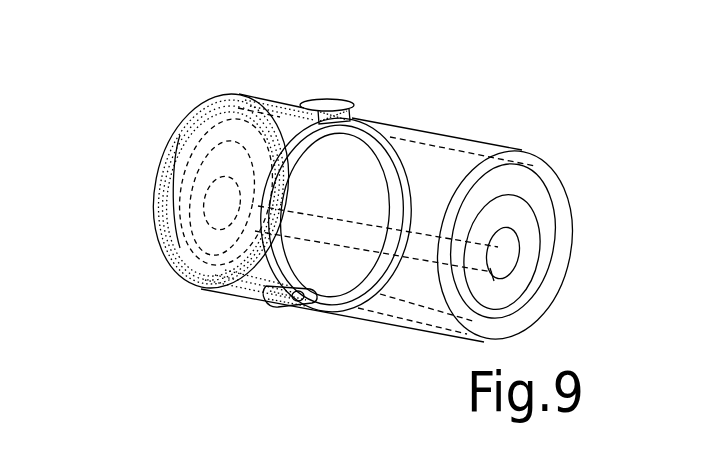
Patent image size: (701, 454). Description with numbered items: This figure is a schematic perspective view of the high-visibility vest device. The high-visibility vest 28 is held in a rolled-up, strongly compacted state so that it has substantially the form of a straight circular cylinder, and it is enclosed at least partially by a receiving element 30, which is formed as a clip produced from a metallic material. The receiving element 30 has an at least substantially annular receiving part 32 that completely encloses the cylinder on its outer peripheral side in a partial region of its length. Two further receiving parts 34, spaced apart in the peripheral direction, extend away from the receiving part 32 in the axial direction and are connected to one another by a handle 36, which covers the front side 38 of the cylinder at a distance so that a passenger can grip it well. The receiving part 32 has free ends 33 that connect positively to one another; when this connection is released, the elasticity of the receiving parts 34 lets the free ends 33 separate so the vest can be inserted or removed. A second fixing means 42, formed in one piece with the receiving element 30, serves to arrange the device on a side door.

The high-visibility vest 28 is at (440, 133).
The receiving element 30 is at (272, 102).
The receiving part 32 is at (355, 116).
The free ends 33 is at (282, 315).
The receiving parts 34 is at (231, 100).
The handle 36 is at (176, 212).
The front side 38 is at (130, 186).
The second fixing means 42 is at (330, 100).